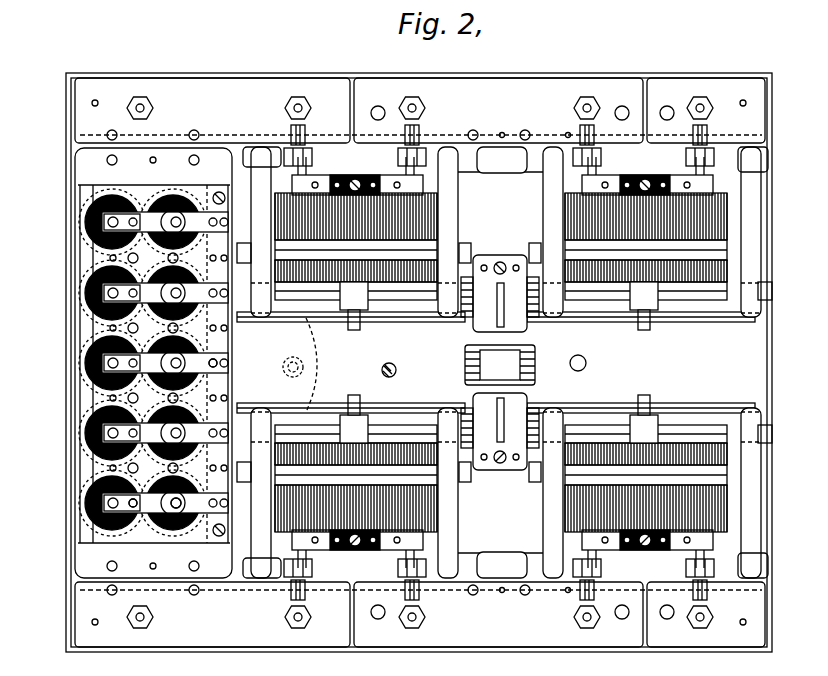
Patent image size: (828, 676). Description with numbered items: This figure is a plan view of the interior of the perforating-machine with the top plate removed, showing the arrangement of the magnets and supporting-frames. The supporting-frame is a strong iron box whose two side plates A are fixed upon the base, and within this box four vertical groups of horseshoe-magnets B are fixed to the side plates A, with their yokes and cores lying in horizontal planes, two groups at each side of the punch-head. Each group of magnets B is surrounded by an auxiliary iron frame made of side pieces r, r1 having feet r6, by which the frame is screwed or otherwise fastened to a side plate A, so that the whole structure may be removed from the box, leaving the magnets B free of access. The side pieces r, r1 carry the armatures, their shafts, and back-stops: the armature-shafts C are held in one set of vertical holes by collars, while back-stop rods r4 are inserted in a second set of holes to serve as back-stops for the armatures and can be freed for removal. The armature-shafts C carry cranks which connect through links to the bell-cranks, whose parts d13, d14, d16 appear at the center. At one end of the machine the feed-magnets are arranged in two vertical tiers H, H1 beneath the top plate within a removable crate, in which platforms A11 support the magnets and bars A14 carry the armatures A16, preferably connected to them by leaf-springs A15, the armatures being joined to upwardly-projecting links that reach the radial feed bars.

The side plate A is at (497, 128).
The horseshoe-magnet B is at (420, 216).
The armature-shaft C is at (301, 287).
The feed-magnet tier H is at (100, 222).
The feed-magnet tier H1 is at (88, 258).
The side piece r is at (553, 193).
The side piece r1 is at (263, 515).
The back-stop rod r4 is at (417, 318).
The foot r6 is at (527, 160).
The contact point d13 is at (308, 370).
The contact point d14 is at (310, 338).
The pivot pin d16 is at (395, 366).
The platform A11 is at (111, 529).
The bar A14 is at (195, 343).
The leaf-spring A15 is at (195, 519).
The armature A16 is at (148, 519).